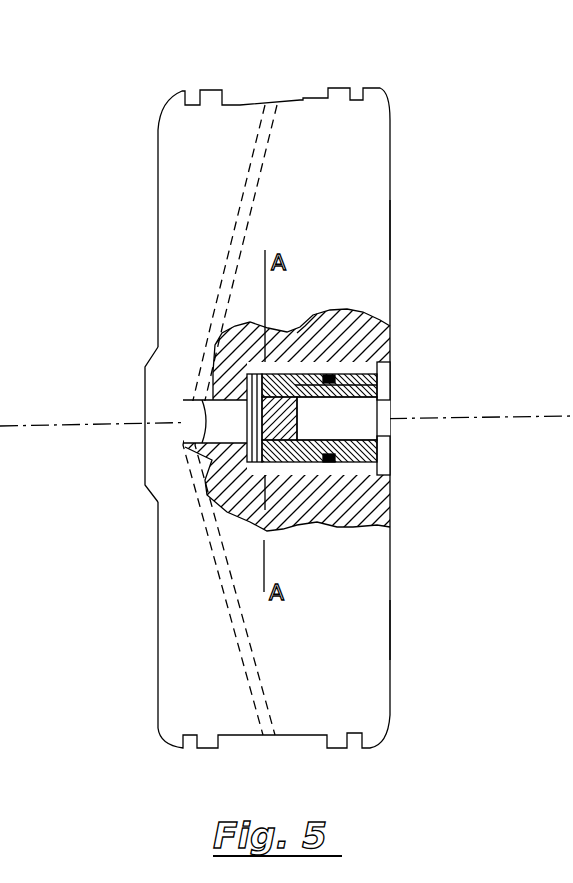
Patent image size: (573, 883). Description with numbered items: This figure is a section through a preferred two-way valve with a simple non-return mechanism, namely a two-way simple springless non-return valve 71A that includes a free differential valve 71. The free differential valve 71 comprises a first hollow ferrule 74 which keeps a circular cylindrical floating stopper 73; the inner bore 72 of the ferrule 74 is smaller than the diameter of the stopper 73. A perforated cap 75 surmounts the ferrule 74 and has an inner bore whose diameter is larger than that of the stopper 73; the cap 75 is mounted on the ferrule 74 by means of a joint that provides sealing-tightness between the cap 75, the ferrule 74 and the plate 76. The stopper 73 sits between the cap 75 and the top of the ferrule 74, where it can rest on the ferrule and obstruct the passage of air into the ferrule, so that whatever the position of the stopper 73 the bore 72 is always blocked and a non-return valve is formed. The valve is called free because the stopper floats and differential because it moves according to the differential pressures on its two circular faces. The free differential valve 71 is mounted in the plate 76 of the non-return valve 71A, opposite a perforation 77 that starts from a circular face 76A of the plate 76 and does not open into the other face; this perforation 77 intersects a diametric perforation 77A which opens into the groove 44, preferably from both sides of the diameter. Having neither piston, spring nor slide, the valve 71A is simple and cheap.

The groove 44 is at (303, 100).
The two-way simple springless non-return valve 71A is at (152, 224).
The circular face of the plate 76A is at (390, 222).
The plate 76 is at (385, 619).
The diametric perforation 77A is at (225, 247).
The cap 75 is at (316, 325).
The perforation 77 is at (200, 408).
The free differential valve 71 is at (356, 431).
The floating stopper 73 is at (217, 452).
The inner bore 72 is at (303, 468).
The ferrule 74 is at (365, 376).